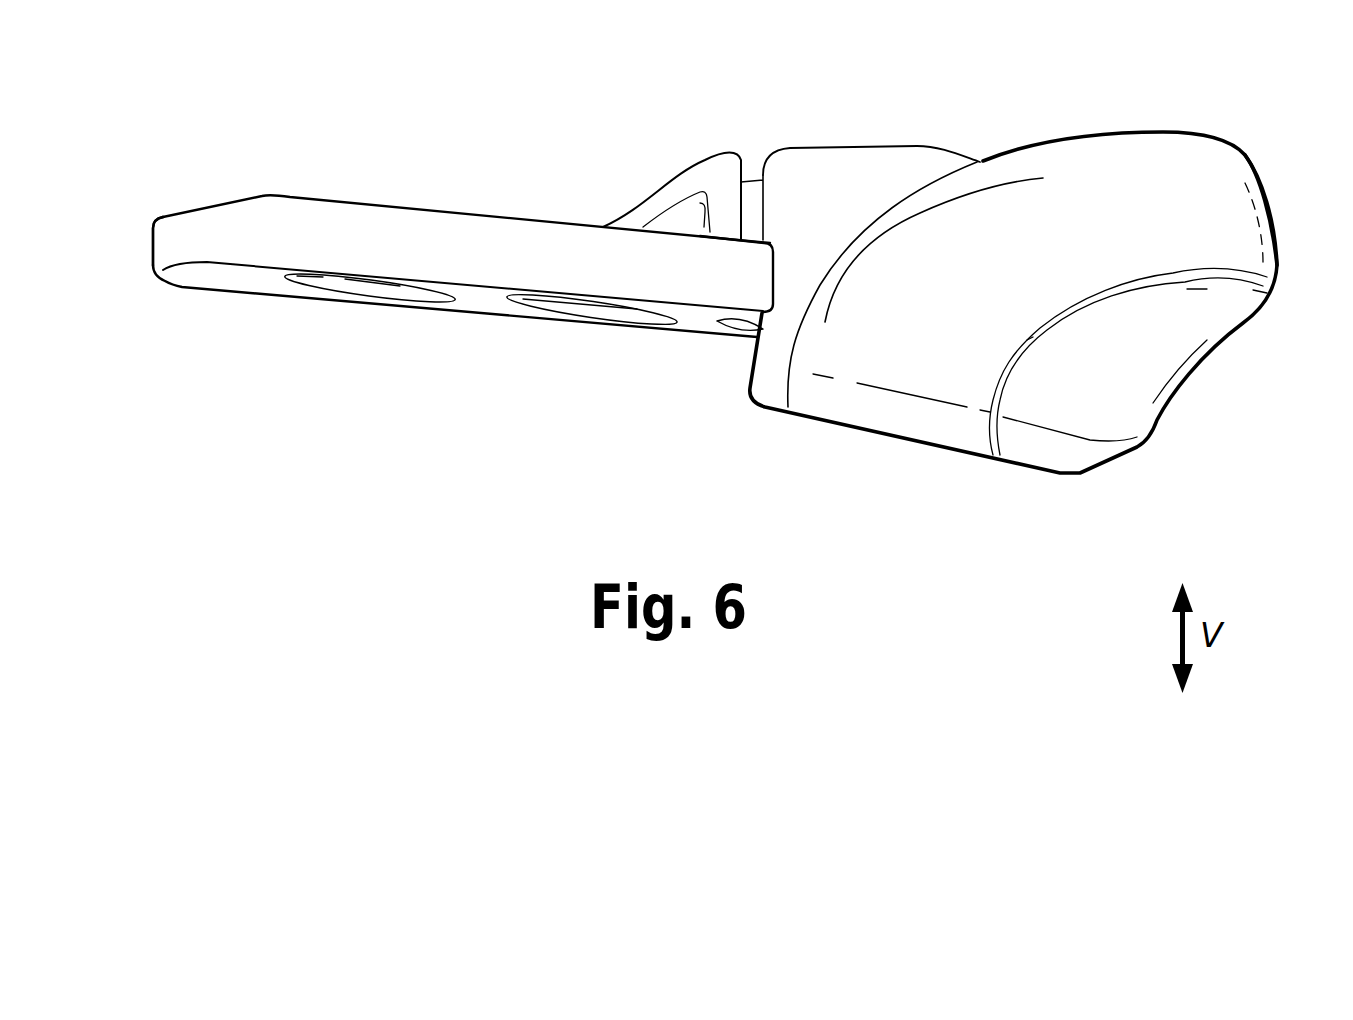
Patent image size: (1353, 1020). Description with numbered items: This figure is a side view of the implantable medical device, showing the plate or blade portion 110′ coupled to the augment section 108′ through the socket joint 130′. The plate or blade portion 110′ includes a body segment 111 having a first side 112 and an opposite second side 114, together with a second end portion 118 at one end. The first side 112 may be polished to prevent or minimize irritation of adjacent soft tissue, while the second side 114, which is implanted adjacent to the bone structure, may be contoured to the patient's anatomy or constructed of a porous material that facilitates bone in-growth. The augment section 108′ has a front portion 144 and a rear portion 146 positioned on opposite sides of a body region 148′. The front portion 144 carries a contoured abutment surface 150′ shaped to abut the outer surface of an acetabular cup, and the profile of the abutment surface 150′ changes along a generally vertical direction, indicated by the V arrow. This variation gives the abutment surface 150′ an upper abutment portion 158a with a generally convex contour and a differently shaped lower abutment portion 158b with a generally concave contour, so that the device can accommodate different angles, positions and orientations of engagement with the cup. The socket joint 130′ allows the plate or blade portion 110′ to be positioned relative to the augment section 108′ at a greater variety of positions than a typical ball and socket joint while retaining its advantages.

The plate or blade portion 110′ is at (452, 235).
The first side 112 is at (370, 197).
The second end portion 118 is at (150, 257).
The body segment 111 is at (490, 300).
The second side 114 is at (590, 328).
The socket joint 130′ is at (746, 155).
The augment section 108′ is at (1116, 150).
The body region 148′ is at (885, 165).
The abutment surface 150′ is at (1262, 184).
The front portion 144 is at (1272, 218).
The upper abutment portion 158a is at (1283, 263).
The lower abutment portion 158b is at (1170, 393).
The rear portion 146 is at (747, 375).